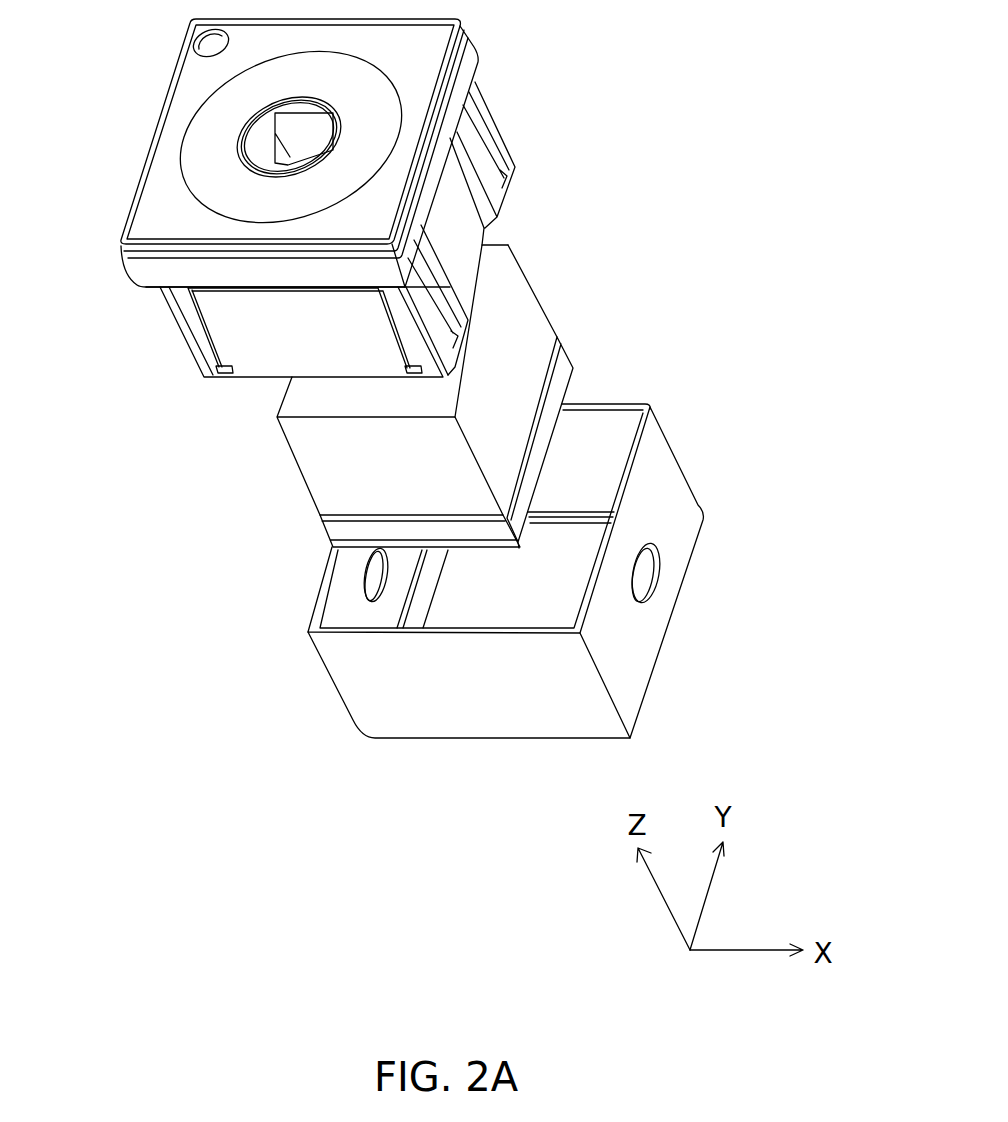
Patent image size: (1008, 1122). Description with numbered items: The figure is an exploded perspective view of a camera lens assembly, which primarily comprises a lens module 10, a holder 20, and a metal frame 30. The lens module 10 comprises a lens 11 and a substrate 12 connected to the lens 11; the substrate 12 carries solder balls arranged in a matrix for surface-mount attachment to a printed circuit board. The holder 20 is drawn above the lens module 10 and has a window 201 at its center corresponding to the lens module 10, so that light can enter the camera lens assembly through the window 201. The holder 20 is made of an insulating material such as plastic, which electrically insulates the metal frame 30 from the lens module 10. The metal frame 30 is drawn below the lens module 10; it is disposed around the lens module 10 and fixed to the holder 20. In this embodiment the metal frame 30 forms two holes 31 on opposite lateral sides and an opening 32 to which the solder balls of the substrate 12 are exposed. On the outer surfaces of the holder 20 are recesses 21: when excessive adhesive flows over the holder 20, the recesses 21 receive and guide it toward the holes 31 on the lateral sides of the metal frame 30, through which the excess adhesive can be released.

The lens module 10 is at (435, 396).
The lens 11 is at (533, 290).
The substrate 12 is at (562, 365).
The holder 20 is at (178, 328).
The window 201 is at (263, 117).
The recess 21 is at (457, 213).
The metal frame 30 is at (460, 618).
The hole 31 is at (377, 575).
The opening 32 is at (512, 588).